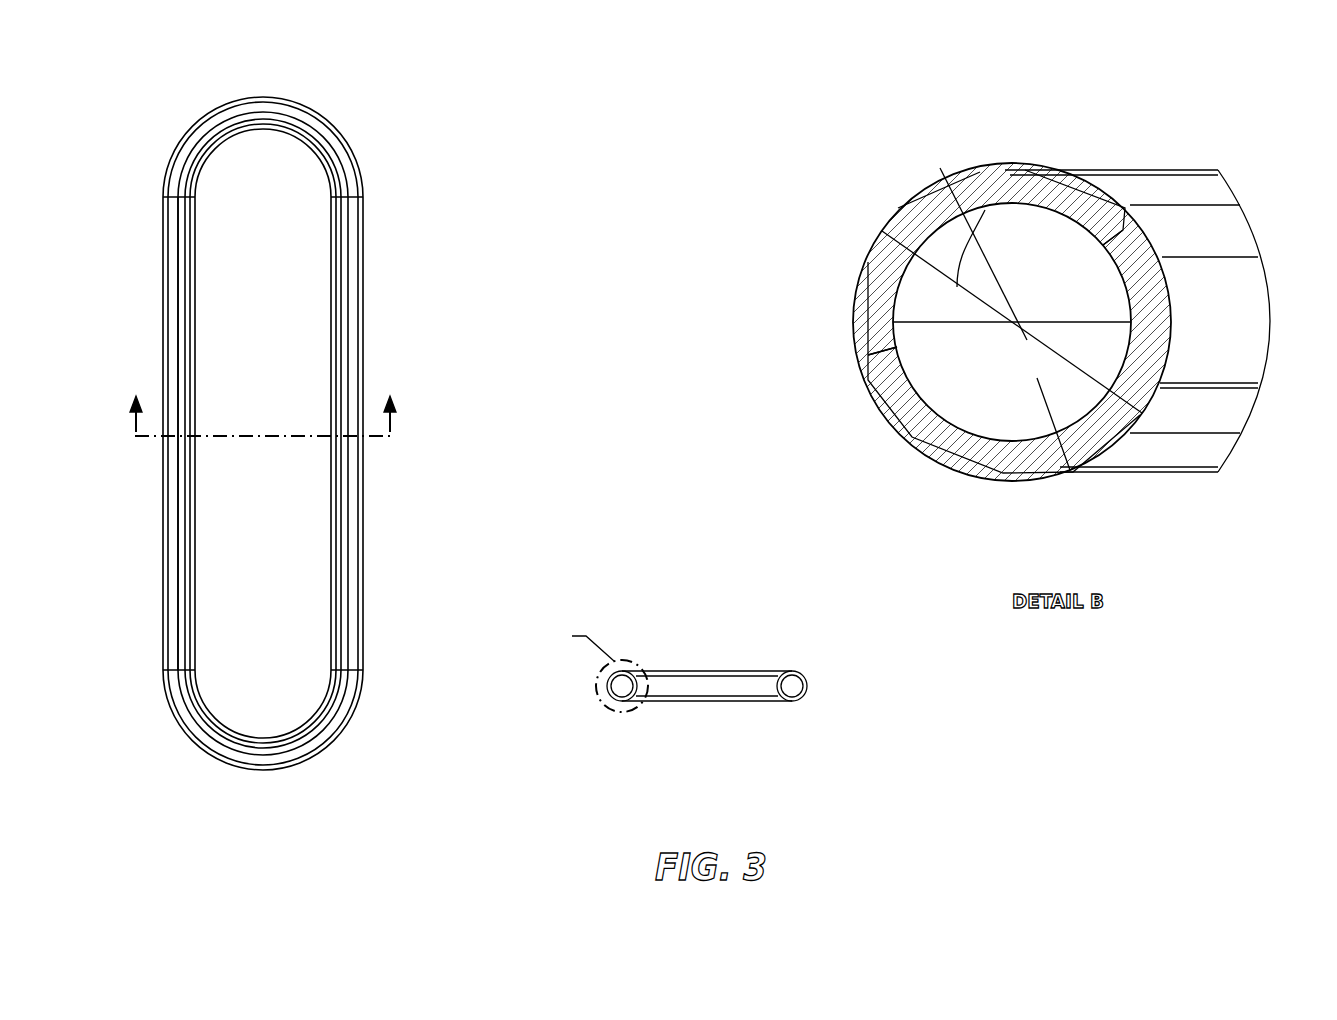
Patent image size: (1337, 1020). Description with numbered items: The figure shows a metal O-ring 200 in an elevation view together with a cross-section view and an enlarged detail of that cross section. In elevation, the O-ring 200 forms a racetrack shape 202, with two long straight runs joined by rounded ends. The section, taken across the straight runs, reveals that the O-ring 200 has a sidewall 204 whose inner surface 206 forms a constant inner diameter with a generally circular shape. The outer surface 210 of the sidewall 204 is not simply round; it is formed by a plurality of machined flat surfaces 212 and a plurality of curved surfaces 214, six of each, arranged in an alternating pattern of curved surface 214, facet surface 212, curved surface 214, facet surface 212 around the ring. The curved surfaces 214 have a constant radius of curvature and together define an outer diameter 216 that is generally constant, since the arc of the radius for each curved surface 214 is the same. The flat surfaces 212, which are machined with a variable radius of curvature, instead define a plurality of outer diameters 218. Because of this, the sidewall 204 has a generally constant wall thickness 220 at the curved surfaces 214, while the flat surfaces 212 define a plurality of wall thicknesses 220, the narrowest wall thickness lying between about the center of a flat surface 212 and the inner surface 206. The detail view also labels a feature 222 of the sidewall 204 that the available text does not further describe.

The metal O-ring 200 is at (467, 406).
The racetrack shape 202 is at (345, 322).
The sidewall 204 is at (1260, 390).
The inner surface 206 is at (940, 410).
The outer surface 210 is at (978, 478).
The flat surfaces 212 is at (1082, 187).
The curved surfaces 214 is at (1155, 247).
The outer diameter 216 is at (985, 210).
The outer diameters 218 is at (940, 168).
The wall thickness 220 is at (1124, 208).
The layer step 222 is at (876, 346).